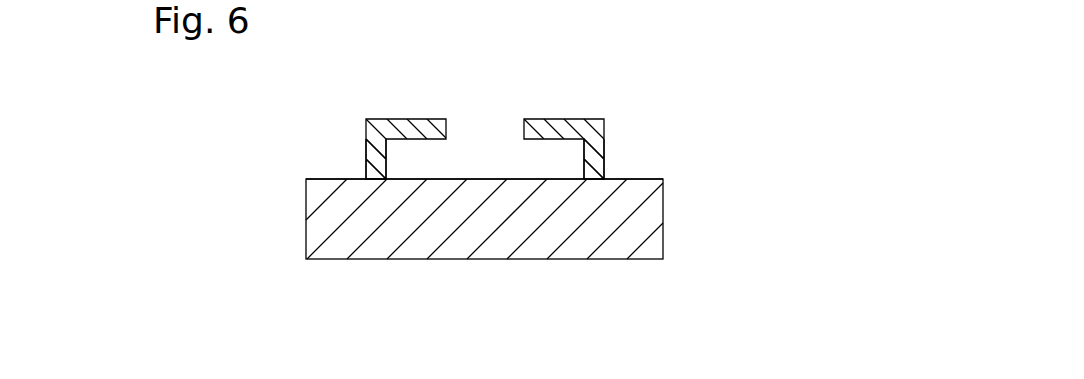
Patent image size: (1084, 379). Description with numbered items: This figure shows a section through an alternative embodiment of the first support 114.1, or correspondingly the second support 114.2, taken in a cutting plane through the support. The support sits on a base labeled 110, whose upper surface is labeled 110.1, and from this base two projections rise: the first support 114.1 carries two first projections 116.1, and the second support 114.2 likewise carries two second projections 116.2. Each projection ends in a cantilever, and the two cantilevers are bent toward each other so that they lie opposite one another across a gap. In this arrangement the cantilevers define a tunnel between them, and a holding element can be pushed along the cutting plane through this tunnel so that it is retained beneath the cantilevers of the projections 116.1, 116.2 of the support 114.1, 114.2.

The substrate 110 is at (680, 258).
The substrate surface 110.1 is at (616, 240).
The first support 114.1 is at (506, 58).
The second support 114.2 is at (564, 99).
The first projection 116.1 is at (352, 154).
The second projection 116.2 is at (618, 153).